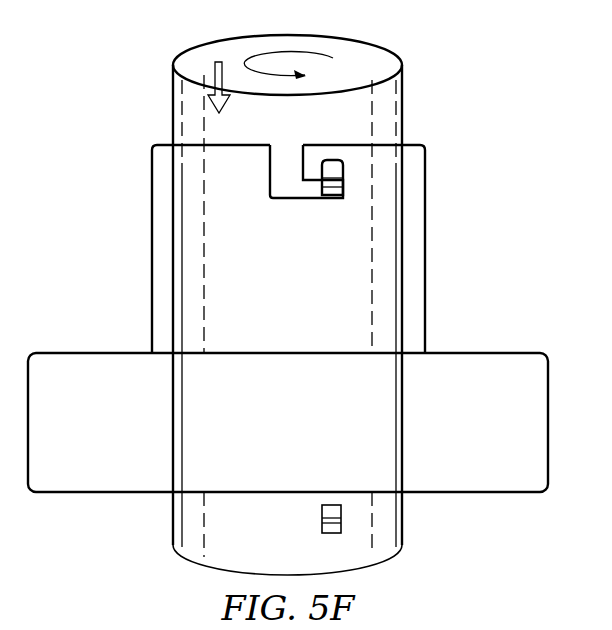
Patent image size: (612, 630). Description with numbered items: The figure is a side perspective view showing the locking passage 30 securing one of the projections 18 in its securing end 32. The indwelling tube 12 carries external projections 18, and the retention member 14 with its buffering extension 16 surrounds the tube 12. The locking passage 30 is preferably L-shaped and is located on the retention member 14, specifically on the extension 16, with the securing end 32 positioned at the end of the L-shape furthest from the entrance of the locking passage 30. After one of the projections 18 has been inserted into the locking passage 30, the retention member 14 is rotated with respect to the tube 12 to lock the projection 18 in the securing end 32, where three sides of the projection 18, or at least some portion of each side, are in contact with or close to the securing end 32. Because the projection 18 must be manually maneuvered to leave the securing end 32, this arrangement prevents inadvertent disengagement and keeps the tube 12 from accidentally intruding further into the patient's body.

The indwelling tube 12 is at (172, 521).
The retention member 14 is at (489, 85).
The buffering extension 16 is at (426, 266).
The projections 18 is at (322, 198).
The locking passage 30 is at (288, 153).
The securing end 32 is at (343, 162).